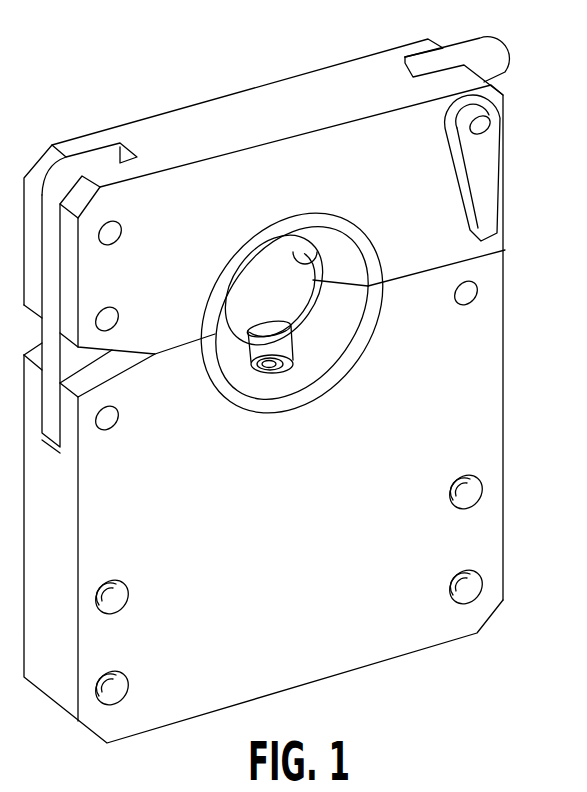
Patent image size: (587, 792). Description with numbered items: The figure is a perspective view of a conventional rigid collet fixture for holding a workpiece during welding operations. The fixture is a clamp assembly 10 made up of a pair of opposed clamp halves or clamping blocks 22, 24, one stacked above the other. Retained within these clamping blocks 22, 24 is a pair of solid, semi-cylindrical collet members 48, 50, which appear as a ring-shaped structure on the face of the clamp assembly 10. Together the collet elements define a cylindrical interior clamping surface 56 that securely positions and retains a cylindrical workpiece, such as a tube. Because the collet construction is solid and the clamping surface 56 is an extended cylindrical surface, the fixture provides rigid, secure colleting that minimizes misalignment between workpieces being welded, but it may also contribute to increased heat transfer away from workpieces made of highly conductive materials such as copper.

The clamp assembly 10 is at (293, 375).
The clamping block 22 is at (462, 425).
The clamping block 24 is at (423, 213).
The collet member 48 is at (272, 408).
The collet member 50 is at (278, 228).
The cylindrical interior clamping surface 56 is at (296, 250).